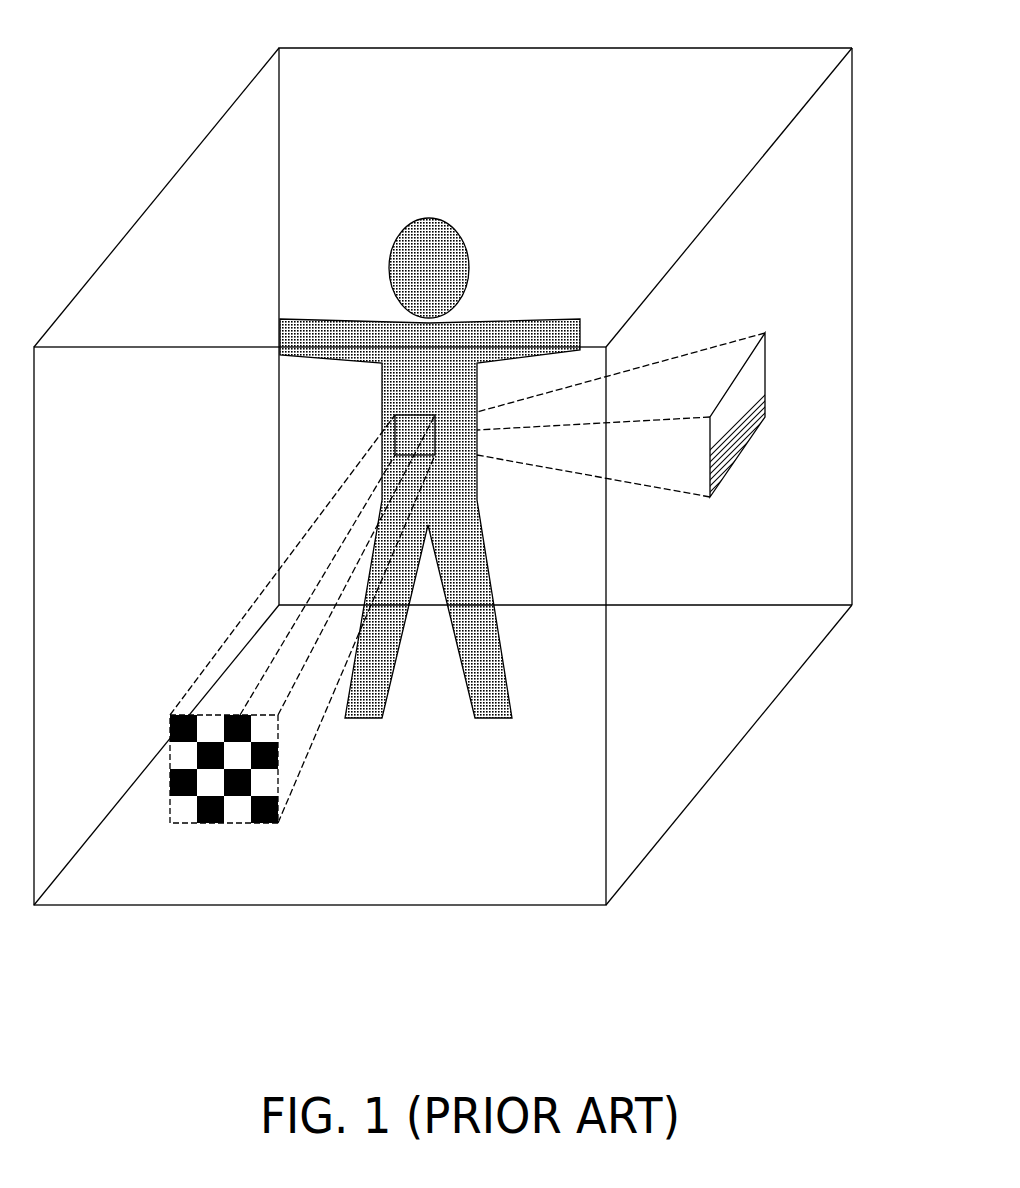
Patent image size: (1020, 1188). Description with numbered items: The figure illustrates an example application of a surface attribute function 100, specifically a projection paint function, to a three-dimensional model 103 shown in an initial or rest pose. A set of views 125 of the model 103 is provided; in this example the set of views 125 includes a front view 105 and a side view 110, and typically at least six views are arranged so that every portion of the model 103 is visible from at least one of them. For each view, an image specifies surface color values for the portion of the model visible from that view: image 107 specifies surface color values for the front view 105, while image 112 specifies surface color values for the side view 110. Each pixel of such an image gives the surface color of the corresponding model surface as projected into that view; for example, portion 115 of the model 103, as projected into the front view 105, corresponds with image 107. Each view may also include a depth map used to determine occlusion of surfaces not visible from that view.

The surface attribute function 100 is at (443, 476).
The three-dimensional model 103 is at (485, 693).
The front view 105 is at (593, 896).
The image 107 is at (278, 778).
The side view 110 is at (718, 733).
The image 112 is at (730, 467).
The portion of model 115 is at (395, 437).
The set of views 125 is at (638, 870).